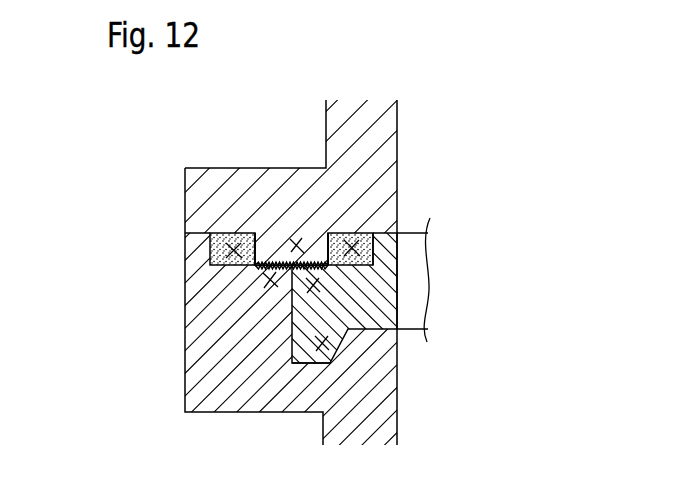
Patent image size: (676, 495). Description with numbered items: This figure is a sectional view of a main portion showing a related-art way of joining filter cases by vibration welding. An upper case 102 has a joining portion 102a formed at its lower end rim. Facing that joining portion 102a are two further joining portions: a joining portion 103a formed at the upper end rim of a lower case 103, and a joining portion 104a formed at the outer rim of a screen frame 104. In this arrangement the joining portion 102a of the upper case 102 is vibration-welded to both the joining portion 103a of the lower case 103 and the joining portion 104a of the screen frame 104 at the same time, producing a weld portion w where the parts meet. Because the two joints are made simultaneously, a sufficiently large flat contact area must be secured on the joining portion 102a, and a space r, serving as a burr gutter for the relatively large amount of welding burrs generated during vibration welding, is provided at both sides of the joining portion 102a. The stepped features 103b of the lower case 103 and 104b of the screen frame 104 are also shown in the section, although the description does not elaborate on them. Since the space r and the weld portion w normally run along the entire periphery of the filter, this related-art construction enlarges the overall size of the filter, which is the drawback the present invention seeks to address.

The upper case 102 is at (220, 166).
The joining portion of the upper case 102a is at (297, 245).
The lower case 103 is at (222, 416).
The joining portion of the lower case 103a is at (270, 280).
The step portion of second member 103b is at (293, 364).
The screen frame 104 is at (401, 281).
The joining portion of the screen frame 104a is at (314, 285).
The step portion of third member 104b is at (323, 343).
The weld portion w is at (298, 266).
The space (burr gutter) r is at (235, 251).